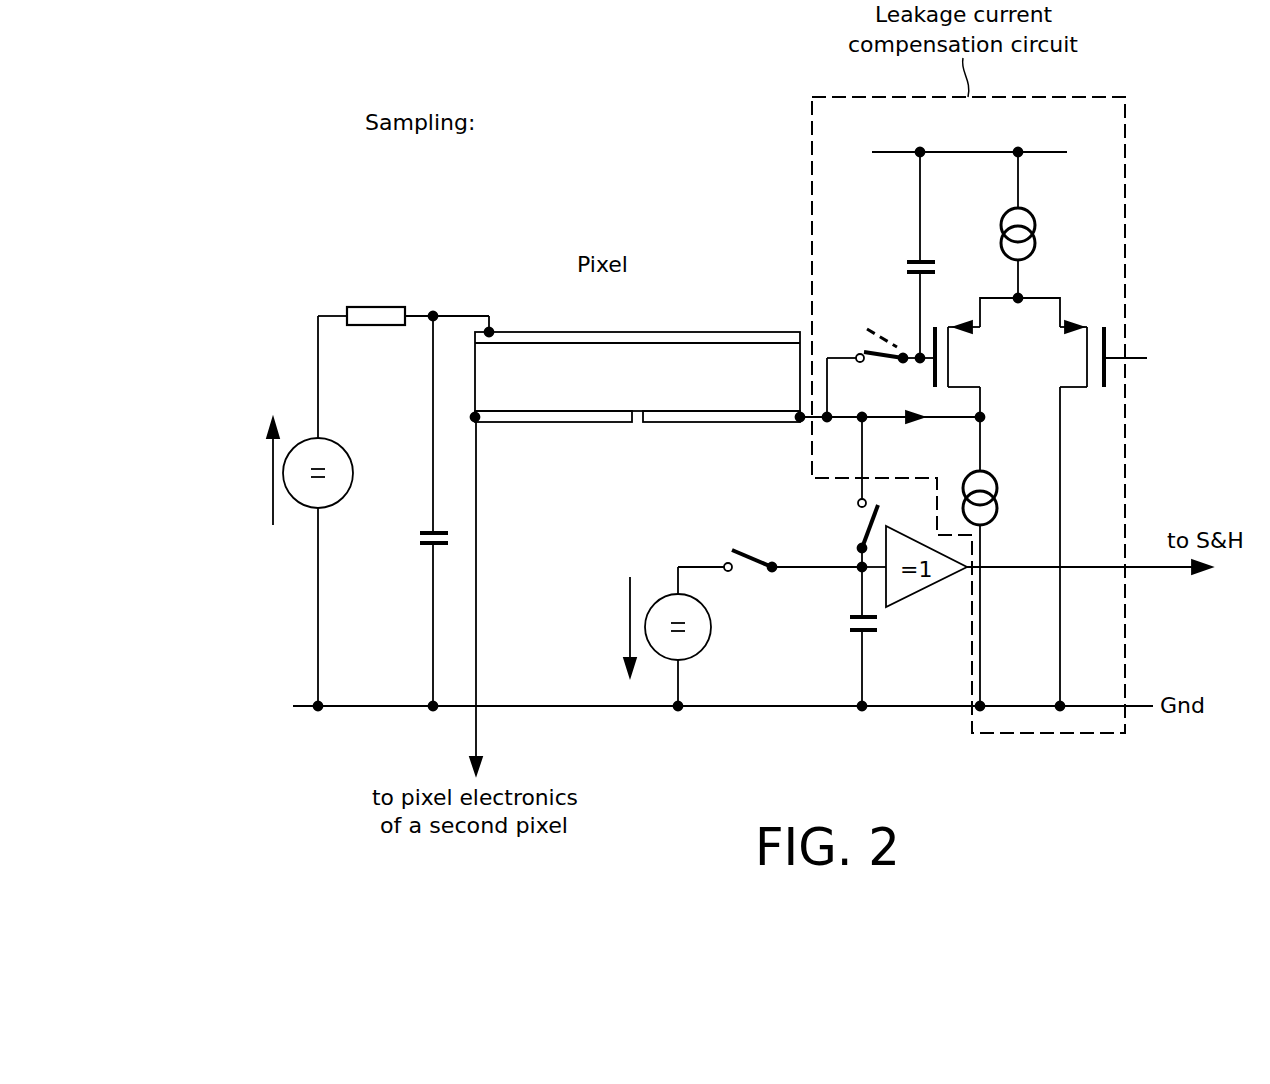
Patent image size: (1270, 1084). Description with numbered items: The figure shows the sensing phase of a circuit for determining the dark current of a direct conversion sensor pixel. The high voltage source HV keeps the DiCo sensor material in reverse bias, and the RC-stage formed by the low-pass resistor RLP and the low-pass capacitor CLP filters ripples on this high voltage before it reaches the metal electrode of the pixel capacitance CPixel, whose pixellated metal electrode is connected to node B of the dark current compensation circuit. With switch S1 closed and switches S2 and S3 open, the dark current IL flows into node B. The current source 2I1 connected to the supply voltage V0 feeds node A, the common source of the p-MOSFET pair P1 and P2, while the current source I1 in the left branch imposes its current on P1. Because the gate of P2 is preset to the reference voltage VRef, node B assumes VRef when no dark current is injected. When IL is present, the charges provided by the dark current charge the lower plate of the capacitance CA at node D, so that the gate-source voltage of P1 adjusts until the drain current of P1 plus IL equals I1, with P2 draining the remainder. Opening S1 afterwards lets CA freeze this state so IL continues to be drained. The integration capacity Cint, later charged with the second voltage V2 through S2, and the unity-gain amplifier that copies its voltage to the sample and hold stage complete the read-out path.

The high voltage source HV is at (290, 532).
The low-pass resistor RLP is at (376, 335).
The low-pass capacitor CLP is at (410, 542).
The pixel capacitance CPixel is at (638, 377).
The node B is at (825, 406).
The dark current IL is at (916, 435).
The second voltage V2 is at (649, 636).
The switch S2 is at (770, 547).
The switch S3 is at (850, 492).
The integration capacity Cint is at (838, 636).
The supply voltage V0 is at (985, 143).
The capacitance CA is at (896, 257).
The current source 2I1 is at (1044, 225).
The node A is at (1020, 316).
The p-MOSFET P1 is at (952, 369).
The p-MOSFET P2 is at (1078, 513).
The reference voltage VRef is at (1146, 365).
The switch S1 is at (873, 360).
The node D is at (921, 389).
The current source I1 is at (994, 561).